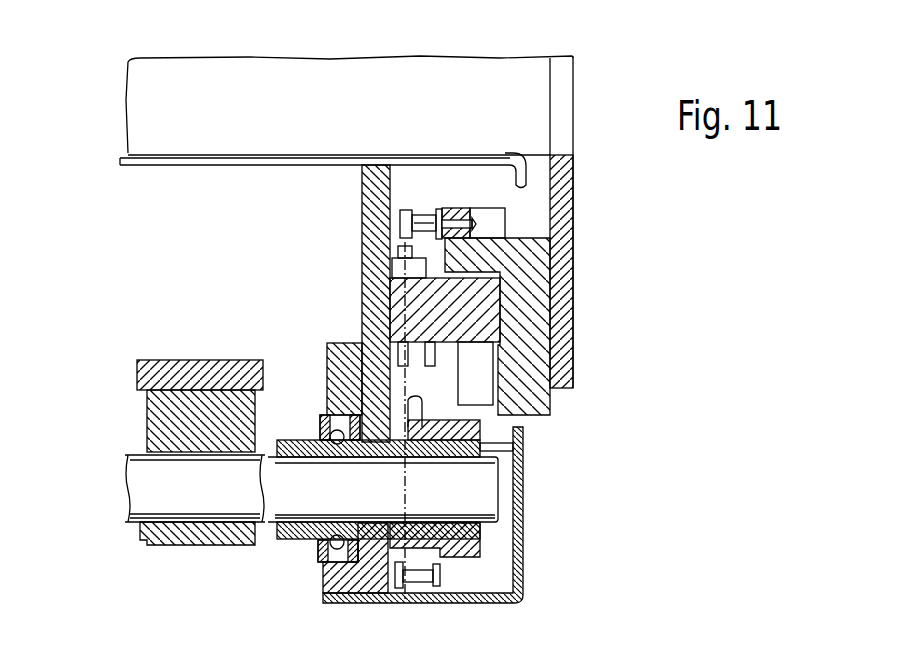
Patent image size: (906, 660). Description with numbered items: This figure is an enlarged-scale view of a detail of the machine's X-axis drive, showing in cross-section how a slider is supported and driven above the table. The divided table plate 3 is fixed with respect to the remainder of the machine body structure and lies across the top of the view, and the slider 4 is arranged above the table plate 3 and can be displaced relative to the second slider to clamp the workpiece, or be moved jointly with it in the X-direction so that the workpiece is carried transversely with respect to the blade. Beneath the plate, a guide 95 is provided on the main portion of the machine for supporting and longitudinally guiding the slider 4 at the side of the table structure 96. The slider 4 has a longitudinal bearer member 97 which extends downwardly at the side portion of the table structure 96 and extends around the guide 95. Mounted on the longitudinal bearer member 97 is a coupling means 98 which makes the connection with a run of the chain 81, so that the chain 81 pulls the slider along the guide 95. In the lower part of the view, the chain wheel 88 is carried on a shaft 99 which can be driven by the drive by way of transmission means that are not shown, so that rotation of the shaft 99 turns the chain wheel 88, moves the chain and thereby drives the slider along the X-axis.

The first slider 4 is at (335, 75).
The table plate 3 is at (120, 162).
The table structure 96 is at (372, 223).
The longitudinal bearer member 97 is at (525, 330).
The coupling means 98 is at (478, 226).
The chain 81 is at (380, 257).
The guide 95 is at (410, 313).
The chain wheel 88 is at (478, 548).
The shaft 99 is at (210, 490).